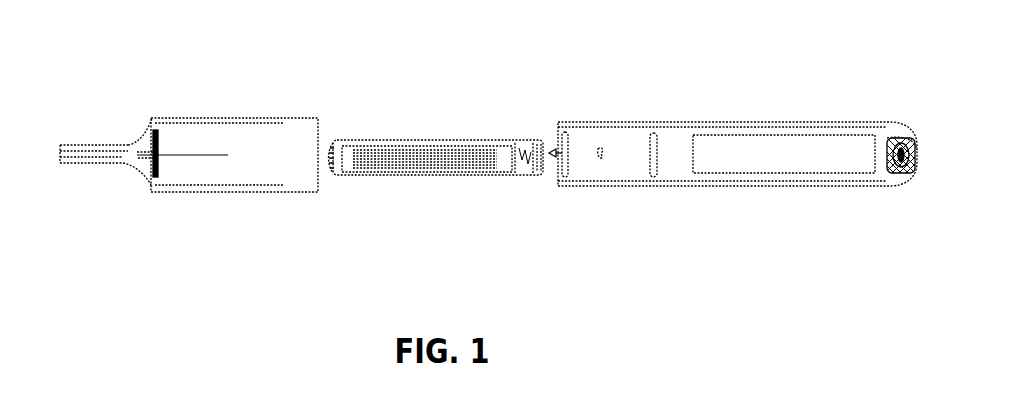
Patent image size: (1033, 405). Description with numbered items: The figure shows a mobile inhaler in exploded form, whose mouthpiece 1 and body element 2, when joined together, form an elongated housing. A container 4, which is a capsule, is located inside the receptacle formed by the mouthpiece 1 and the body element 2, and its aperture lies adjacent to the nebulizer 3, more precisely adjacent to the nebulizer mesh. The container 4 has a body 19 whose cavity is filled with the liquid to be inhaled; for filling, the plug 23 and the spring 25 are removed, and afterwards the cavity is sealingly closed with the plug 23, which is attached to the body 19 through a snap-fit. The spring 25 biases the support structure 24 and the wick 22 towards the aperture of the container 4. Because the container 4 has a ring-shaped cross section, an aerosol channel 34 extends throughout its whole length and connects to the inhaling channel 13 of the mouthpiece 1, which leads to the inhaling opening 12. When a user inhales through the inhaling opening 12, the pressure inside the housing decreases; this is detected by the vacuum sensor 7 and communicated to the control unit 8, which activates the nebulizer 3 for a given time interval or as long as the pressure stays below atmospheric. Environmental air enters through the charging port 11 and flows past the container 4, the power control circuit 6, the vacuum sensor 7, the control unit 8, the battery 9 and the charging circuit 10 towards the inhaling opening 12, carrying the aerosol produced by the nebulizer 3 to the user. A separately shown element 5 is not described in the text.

The mouthpiece 1 is at (151, 128).
The body element 2 is at (680, 122).
The nebulizer 3 is at (151, 118).
The container 4 is at (350, 138).
The inner needle cap 5 is at (243, 136).
The power control circuit 6 is at (558, 123).
The vacuum sensor 7 is at (600, 160).
The control unit 8 is at (655, 163).
The battery 9 is at (758, 156).
The charging circuit 10 is at (885, 129).
The charging port 11 is at (902, 182).
The inhaling opening 12 is at (62, 144).
The inhaling channel 13 is at (93, 164).
The body 19 is at (475, 176).
The wick 22 is at (407, 175).
The plug 23 is at (535, 174).
The support structure 24 is at (405, 150).
The spring 25 is at (517, 141).
The aerosol channel 34 is at (143, 167).